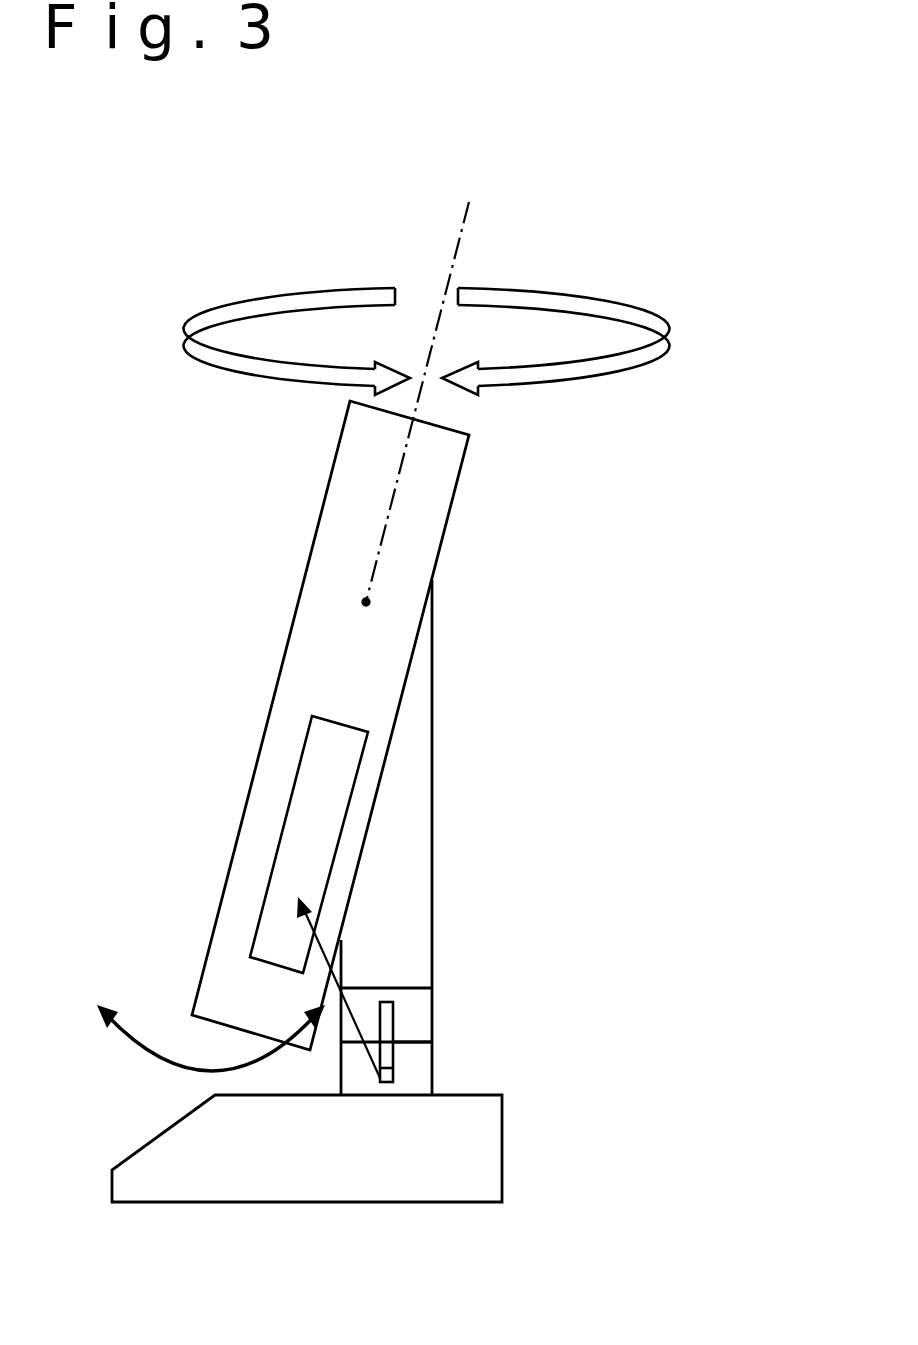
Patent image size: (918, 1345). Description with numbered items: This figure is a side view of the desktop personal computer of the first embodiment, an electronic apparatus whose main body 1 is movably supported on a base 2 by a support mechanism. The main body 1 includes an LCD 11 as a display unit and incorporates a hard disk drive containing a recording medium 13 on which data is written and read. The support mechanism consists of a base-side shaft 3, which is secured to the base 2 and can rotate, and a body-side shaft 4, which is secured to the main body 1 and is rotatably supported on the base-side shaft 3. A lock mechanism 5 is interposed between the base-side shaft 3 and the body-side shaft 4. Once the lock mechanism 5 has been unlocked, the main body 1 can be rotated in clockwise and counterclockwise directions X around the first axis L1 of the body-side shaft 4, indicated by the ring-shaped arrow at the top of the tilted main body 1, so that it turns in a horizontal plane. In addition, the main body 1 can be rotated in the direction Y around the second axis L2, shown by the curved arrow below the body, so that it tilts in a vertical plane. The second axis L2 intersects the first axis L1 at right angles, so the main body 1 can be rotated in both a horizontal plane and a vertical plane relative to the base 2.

The main body 1 is at (438, 523).
The base 2 is at (492, 1172).
The base-side shaft 3 is at (425, 1068).
The body-side shaft 4 is at (420, 1002).
The lock mechanism 5 is at (405, 1075).
The LCD 11 is at (410, 1042).
The recording medium 13 is at (387, 1002).
The first axis L1 is at (455, 243).
The second axis L2 is at (366, 602).
The clockwise and counterclockwise directions X is at (610, 310).
The direction Y is at (200, 1048).